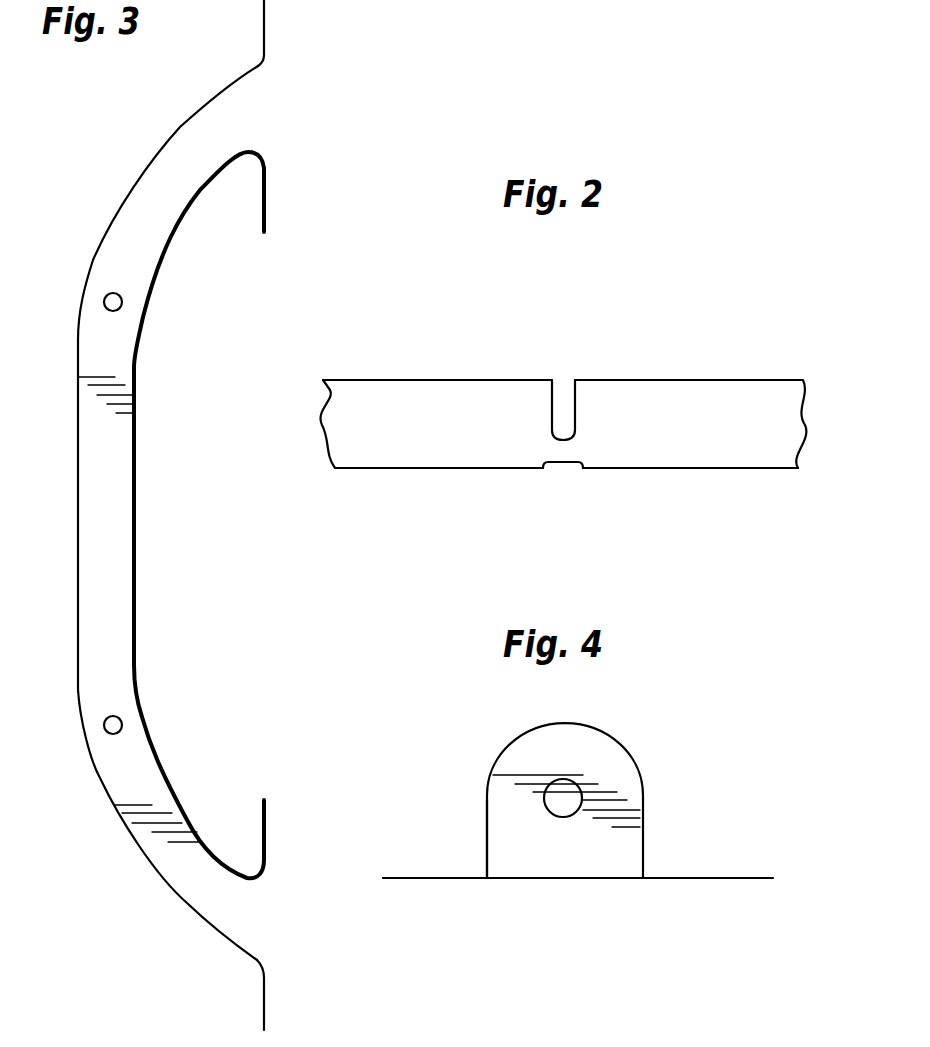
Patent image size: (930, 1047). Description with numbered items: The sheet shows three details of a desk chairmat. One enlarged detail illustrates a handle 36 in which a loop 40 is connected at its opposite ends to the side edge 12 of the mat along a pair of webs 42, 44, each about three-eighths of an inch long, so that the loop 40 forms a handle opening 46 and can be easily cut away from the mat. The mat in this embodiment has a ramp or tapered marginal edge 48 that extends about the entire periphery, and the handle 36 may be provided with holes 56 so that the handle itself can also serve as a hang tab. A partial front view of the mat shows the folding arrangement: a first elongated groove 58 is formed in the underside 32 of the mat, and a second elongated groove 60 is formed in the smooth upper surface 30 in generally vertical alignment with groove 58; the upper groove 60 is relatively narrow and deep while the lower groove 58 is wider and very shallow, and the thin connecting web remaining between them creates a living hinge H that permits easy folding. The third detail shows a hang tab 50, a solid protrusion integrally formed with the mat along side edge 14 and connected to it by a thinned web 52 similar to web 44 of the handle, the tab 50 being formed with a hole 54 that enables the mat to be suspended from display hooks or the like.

In FIG. 3, the side edge 12 is at (262, 31).
In FIG. 3, the web 42 is at (280, 113).
In FIG. 3, the loop 40 is at (92, 573).
In FIG. 3, the web 44 is at (267, 925).
In FIG. 3, the tapered marginal edge 48 is at (273, 997).
In FIG. 3, the handle opening 46 is at (171, 483).
In FIG. 3, the handle 36 is at (75, 410).
In FIG. 3, the holes 56 is at (122, 302).
In FIG. 2, the upper surface 30 is at (772, 378).
In FIG. 2, the second elongated groove 60 is at (570, 418).
In FIG. 2, the first elongated groove 58 is at (558, 468).
In FIG. 2, the living hinge H is at (557, 448).
In FIG. 2, the underside 32 is at (720, 468).
In FIG. 4, the side edge 14 is at (405, 878).
In FIG. 4, the hang tab 50 is at (656, 805).
In FIG. 4, the thinned web 52 is at (510, 878).
In FIG. 4, the hole 54 is at (567, 793).